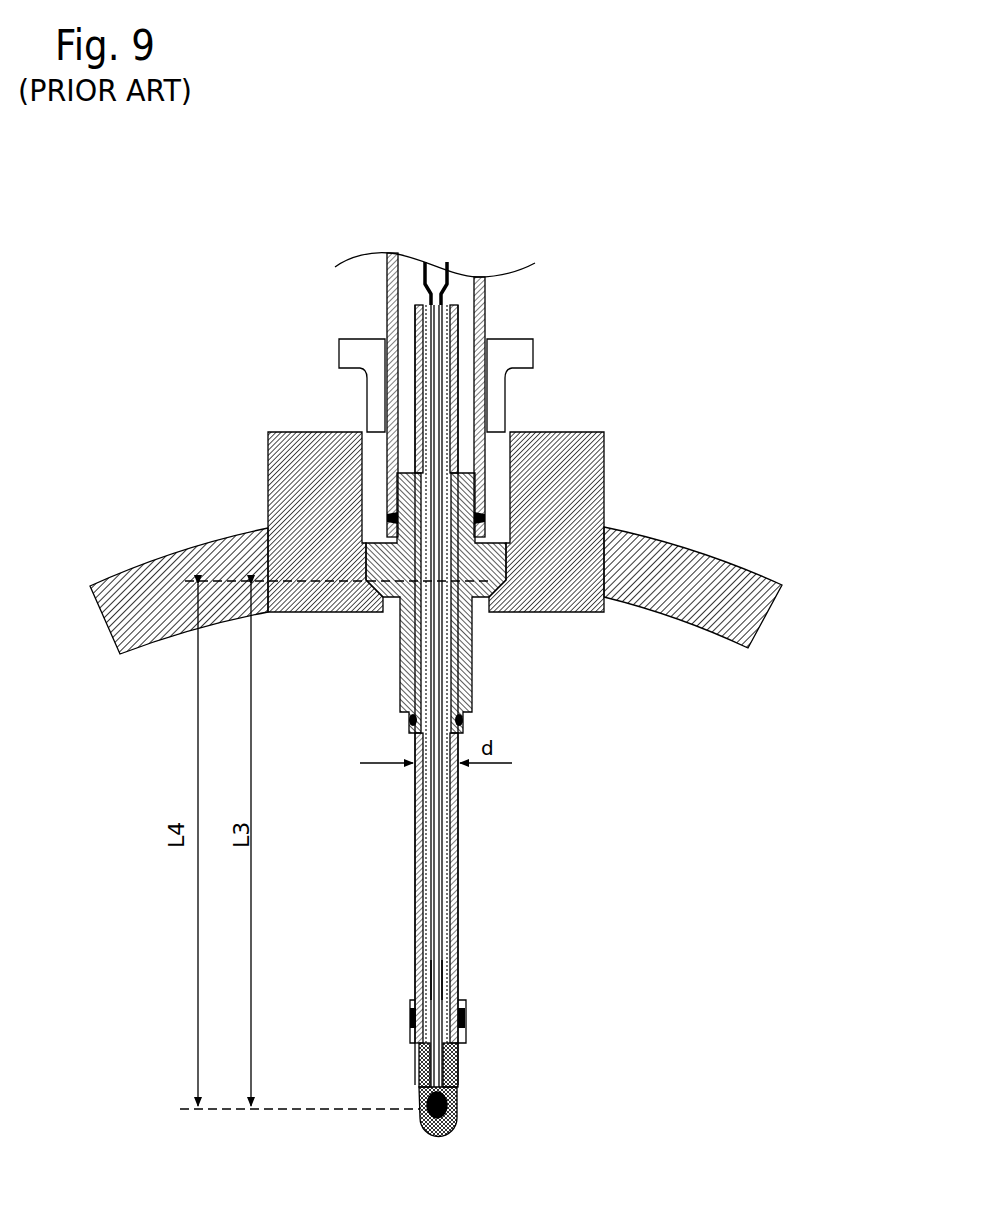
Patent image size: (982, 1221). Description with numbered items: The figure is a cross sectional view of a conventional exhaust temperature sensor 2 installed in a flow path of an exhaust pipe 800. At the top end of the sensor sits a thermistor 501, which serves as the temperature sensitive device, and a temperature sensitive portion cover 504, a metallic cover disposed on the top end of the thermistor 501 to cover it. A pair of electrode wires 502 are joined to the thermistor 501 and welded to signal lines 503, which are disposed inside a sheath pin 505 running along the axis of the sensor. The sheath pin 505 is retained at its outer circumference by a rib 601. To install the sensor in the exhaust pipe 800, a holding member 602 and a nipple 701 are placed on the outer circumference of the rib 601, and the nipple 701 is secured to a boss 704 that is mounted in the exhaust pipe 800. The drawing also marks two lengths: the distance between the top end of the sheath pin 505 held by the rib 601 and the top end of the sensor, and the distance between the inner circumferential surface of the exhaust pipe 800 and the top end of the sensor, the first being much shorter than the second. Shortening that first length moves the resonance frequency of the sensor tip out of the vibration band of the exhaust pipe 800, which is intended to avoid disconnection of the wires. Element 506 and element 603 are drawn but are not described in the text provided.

The exhaust temperature sensor 2 is at (295, 255).
The thermistor 501 is at (448, 1098).
The electrode wires 502 is at (420, 1080).
The signal lines 503 is at (432, 980).
The temperature sensitive portion cover 504 is at (460, 1033).
The sheath pin 505 is at (455, 850).
The protective cover 506 is at (450, 1132).
The rib 601 is at (475, 598).
The holding member 602 is at (485, 415).
The lead terminal 603 is at (445, 298).
The nipple 701 is at (505, 355).
The boss 704 is at (572, 490).
The exhaust pipe 800 is at (737, 577).